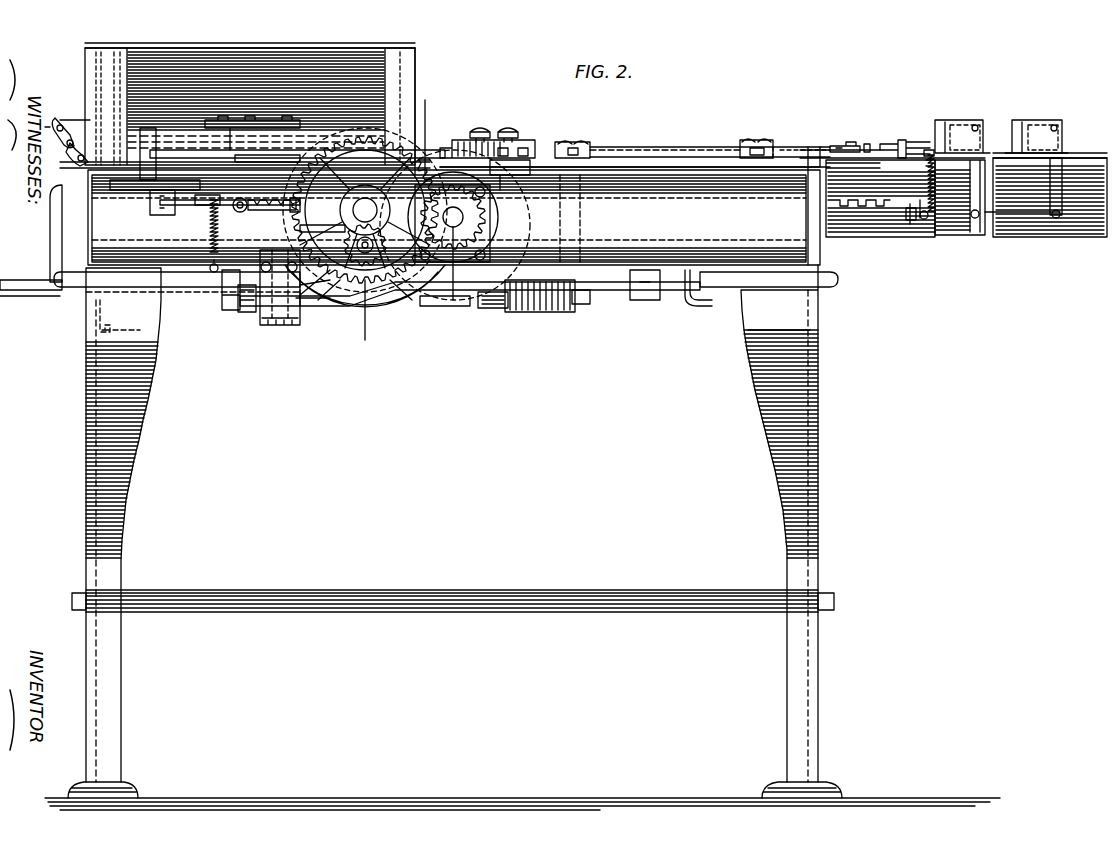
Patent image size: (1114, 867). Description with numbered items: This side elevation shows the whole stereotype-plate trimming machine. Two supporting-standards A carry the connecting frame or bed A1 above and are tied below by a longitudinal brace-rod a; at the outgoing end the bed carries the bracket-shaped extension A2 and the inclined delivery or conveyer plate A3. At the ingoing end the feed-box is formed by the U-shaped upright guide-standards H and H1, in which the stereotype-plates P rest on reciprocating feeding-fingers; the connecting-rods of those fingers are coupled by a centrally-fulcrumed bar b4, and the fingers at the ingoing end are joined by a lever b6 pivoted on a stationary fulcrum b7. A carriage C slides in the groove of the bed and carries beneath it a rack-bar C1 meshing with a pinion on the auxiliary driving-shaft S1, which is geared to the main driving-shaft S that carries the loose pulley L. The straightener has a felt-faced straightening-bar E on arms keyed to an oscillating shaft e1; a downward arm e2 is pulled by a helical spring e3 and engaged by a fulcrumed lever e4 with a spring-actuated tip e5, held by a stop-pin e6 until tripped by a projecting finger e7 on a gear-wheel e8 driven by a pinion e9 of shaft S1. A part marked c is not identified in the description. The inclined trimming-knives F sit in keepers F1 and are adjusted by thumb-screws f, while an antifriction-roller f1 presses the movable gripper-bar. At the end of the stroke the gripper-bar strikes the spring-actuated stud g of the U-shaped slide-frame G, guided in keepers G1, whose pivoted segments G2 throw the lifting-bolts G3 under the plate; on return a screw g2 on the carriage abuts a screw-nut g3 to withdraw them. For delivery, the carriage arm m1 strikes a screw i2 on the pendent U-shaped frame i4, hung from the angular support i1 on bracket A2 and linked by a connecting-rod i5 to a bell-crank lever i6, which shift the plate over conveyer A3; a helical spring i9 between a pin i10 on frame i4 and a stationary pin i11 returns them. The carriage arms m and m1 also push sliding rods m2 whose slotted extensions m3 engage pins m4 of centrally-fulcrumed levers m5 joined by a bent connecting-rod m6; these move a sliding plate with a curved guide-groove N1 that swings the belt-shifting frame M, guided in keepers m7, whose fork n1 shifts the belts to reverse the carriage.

The supporting-standard A is at (451, 531).
The longitudinal brace-rod a is at (453, 612).
The connecting frame or bed A1 is at (454, 206).
The bracket-shaped extension A2 is at (1052, 142).
The inclined stationary delivery-plate A3 is at (1082, 220).
The U-shaped upright guide-standard H is at (85, 67).
The U-shaped upright guide-standard H1 is at (418, 78).
The stereotype-plate P is at (308, 50).
The centrally-fulcrumed bar b4 is at (236, 118).
The lever b6 is at (67, 119).
The stationary fulcrum b7 is at (67, 157).
The straightening-bar E is at (392, 118).
The carriage C is at (336, 160).
The rack-bar C1 is at (852, 210).
The arm c is at (150, 176).
The oscillating shaft e1 is at (188, 210).
The arm e2 is at (238, 214).
The helical spring e3 is at (212, 232).
The fulcrumed lever e4 is at (262, 215).
The pivoted spring-actuated tip e5 is at (288, 214).
The stop-pin e6 is at (201, 217).
The projecting finger e7 is at (322, 229).
The gear-wheel e8 is at (305, 180).
The pinion e9 is at (480, 205).
The thumb-screw f is at (492, 128).
The antifriction-roller f1 is at (466, 136).
The inclined cutting-knife F is at (520, 140).
The keeper F1 is at (576, 142).
The U-shaped slide-frame G is at (690, 147).
The keeper G1 is at (776, 148).
The pivoted segment G2 is at (588, 146).
The lifting-bolt G3 is at (760, 142).
The spring-actuated stud g is at (836, 142).
The screw g2 is at (896, 142).
The screw-nut g3 is at (868, 142).
The angular support i1 is at (1022, 122).
The screw i2 is at (910, 222).
The pendent U-shaped frame i4 is at (962, 218).
The connecting-rod i5 is at (1020, 216).
The pendent bell-crank lever i6 is at (1060, 170).
The helical spring i9 is at (932, 200).
The pin i10 is at (922, 220).
The stationary pin i11 is at (928, 140).
The driving-shaft S is at (365, 242).
The auxiliary driving-shaft S1 is at (455, 243).
The loose pulley L is at (405, 295).
The U-shaped belt-shifting frame M is at (338, 298).
The curved guide-groove N1 is at (545, 294).
The belt-shifting fork n1 is at (444, 315).
The arm m is at (52, 262).
The arm m1 is at (612, 226).
The horizontal sliding rod m2 is at (698, 306).
The slotted extension m3 is at (618, 300).
The pin m4 is at (578, 304).
The centrally-fulcrumed lever m5 is at (658, 296).
The bent connecting-rod m6 is at (522, 306).
The keeper m7 is at (282, 322).